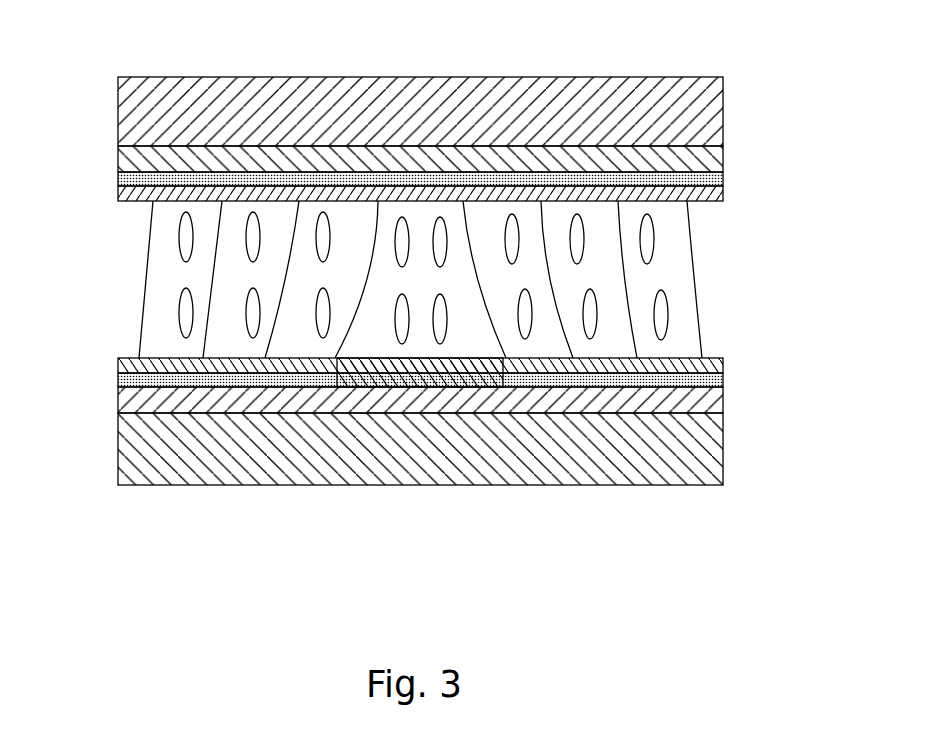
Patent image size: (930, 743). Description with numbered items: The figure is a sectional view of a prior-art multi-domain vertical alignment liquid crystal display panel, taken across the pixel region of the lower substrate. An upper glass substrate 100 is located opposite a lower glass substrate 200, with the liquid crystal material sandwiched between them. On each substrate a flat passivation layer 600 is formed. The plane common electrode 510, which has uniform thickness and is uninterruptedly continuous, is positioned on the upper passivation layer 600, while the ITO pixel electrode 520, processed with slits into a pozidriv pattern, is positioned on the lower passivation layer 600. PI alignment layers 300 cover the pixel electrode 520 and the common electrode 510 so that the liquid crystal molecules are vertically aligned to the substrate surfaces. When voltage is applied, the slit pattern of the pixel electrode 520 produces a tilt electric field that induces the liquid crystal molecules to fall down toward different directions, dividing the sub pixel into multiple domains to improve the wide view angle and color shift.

The upper glass substrate 100 is at (703, 103).
The lower glass substrate 200 is at (657, 469).
The PI alignment layer 300 is at (132, 197).
The common electrode 510 is at (700, 182).
The pixel electrode 520 is at (708, 382).
The passivation layer 600 is at (135, 160).